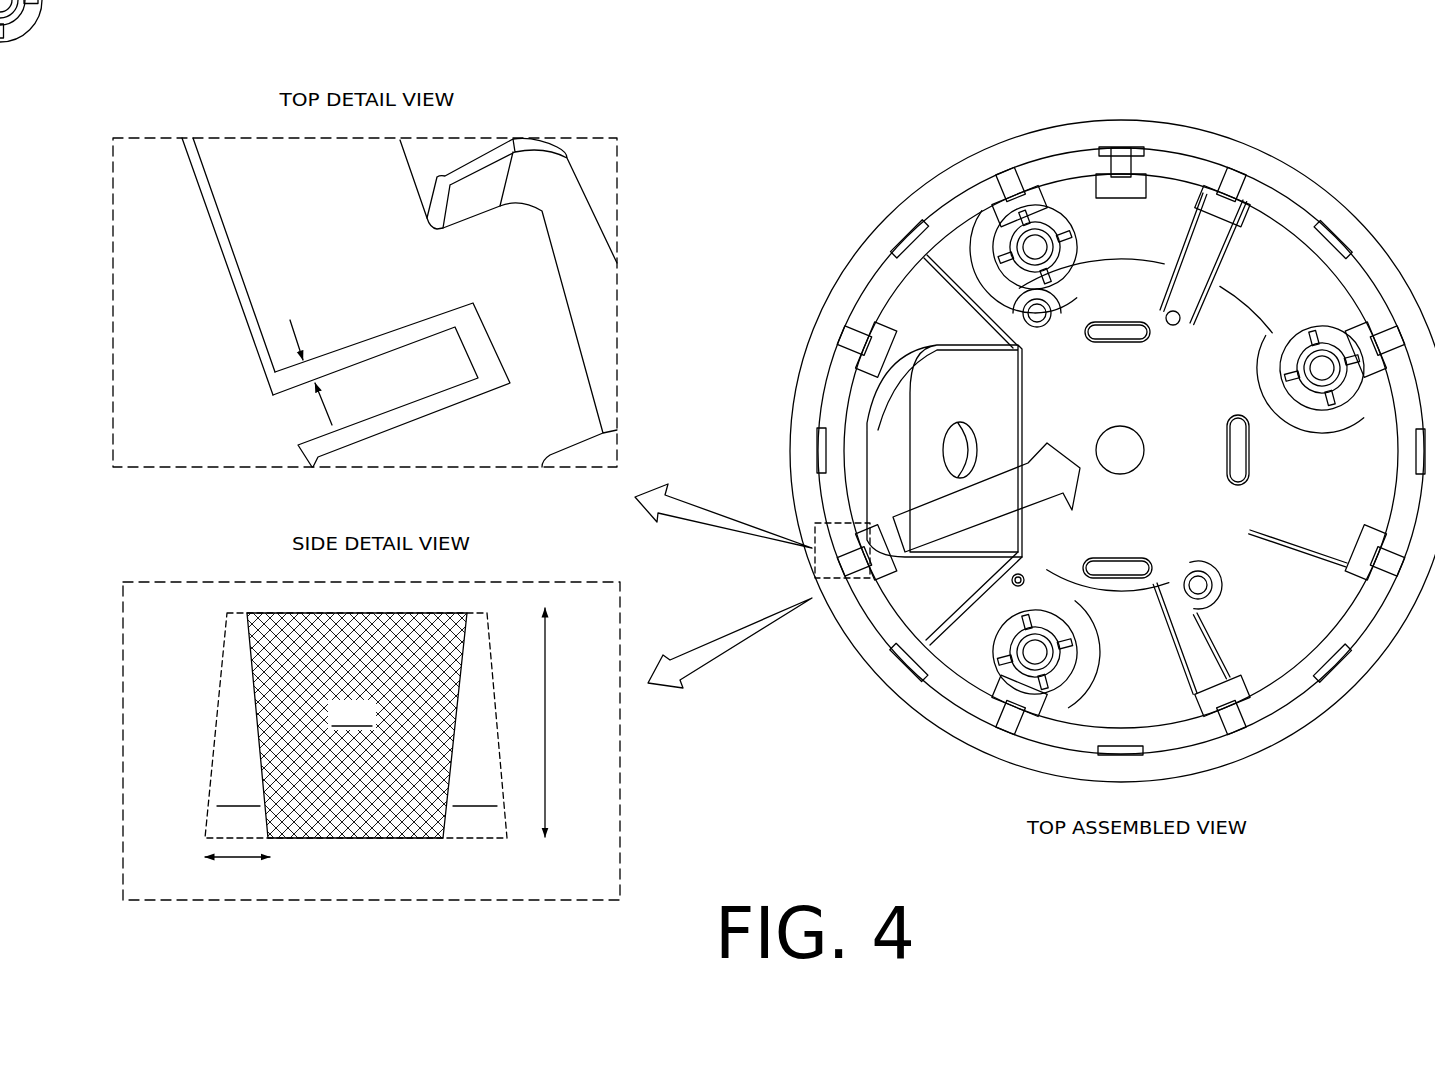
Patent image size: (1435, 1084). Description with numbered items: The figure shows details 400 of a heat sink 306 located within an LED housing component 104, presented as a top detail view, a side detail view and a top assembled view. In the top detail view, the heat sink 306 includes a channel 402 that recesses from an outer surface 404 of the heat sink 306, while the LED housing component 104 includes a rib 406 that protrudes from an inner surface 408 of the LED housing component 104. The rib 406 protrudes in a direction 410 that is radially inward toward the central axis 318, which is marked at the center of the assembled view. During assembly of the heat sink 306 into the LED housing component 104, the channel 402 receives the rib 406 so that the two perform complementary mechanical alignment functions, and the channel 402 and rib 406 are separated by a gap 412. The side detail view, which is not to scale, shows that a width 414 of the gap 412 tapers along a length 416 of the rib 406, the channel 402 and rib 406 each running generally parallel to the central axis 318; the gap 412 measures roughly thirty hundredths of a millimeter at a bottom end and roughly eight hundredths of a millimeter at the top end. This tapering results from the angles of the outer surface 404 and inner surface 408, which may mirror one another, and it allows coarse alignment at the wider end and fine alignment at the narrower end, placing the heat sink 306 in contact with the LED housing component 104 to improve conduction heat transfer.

The details 400 is at (183, 85).
The channel 402 is at (433, 317).
The outer surface 404 is at (243, 293).
The rib 406 is at (417, 343).
The inner surface 408 is at (207, 217).
The direction 410 is at (1037, 512).
The gap 412 is at (323, 407).
The width 414 is at (240, 858).
The length 416 is at (545, 807).
The LED housing component 104 is at (1190, 126).
The heat sink 306 is at (1292, 200).
The central axis 318 is at (1128, 428).